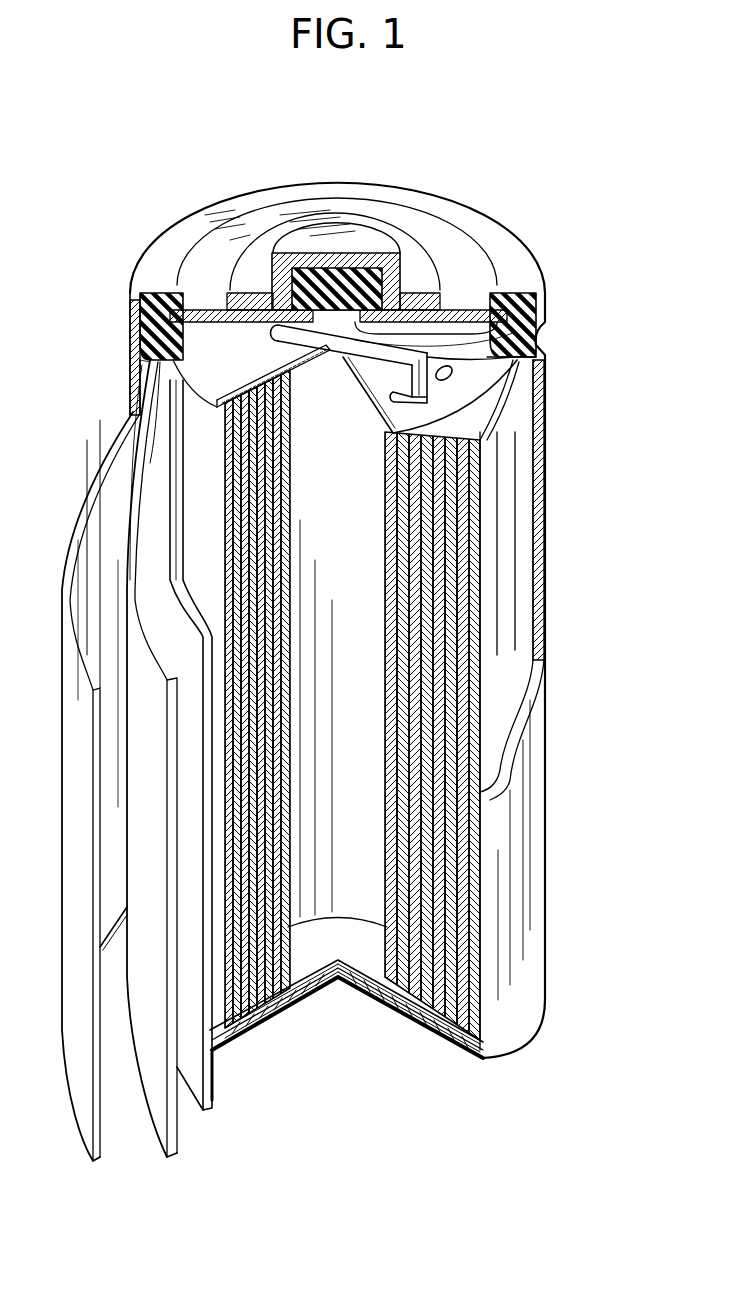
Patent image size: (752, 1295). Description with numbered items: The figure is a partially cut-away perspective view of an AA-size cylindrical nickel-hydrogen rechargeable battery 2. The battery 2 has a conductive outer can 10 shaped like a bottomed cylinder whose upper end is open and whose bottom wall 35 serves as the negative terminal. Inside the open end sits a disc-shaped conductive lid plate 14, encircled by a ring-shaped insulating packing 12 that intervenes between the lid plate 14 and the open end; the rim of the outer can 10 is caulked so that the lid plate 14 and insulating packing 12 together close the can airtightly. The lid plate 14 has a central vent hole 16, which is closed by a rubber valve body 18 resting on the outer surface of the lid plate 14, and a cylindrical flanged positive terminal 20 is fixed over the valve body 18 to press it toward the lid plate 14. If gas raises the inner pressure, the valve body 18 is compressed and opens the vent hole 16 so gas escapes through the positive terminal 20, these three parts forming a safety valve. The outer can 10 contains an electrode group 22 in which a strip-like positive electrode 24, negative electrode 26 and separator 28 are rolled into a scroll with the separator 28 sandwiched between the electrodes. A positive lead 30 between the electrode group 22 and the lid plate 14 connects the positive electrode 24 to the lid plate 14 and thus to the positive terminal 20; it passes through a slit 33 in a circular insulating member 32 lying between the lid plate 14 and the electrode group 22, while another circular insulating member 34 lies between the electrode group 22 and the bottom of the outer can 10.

The cylindrical battery 2 is at (517, 190).
The outer can 10 is at (523, 655).
The insulating packing 12 is at (135, 325).
The lid plate 14 is at (212, 292).
The vent hole 16 is at (540, 318).
The valve body 18 is at (310, 283).
The positive terminal 20 is at (355, 228).
The electrode group 22 is at (518, 547).
The positive electrode 24 is at (212, 1100).
The negative electrode 26 is at (102, 1148).
The separator 28 is at (177, 1142).
The positive lead 30 is at (463, 383).
The insulating member 32 is at (437, 385).
The slit 33 is at (440, 375).
The insulating member 34 is at (360, 955).
The bottom wall 35 is at (287, 1005).